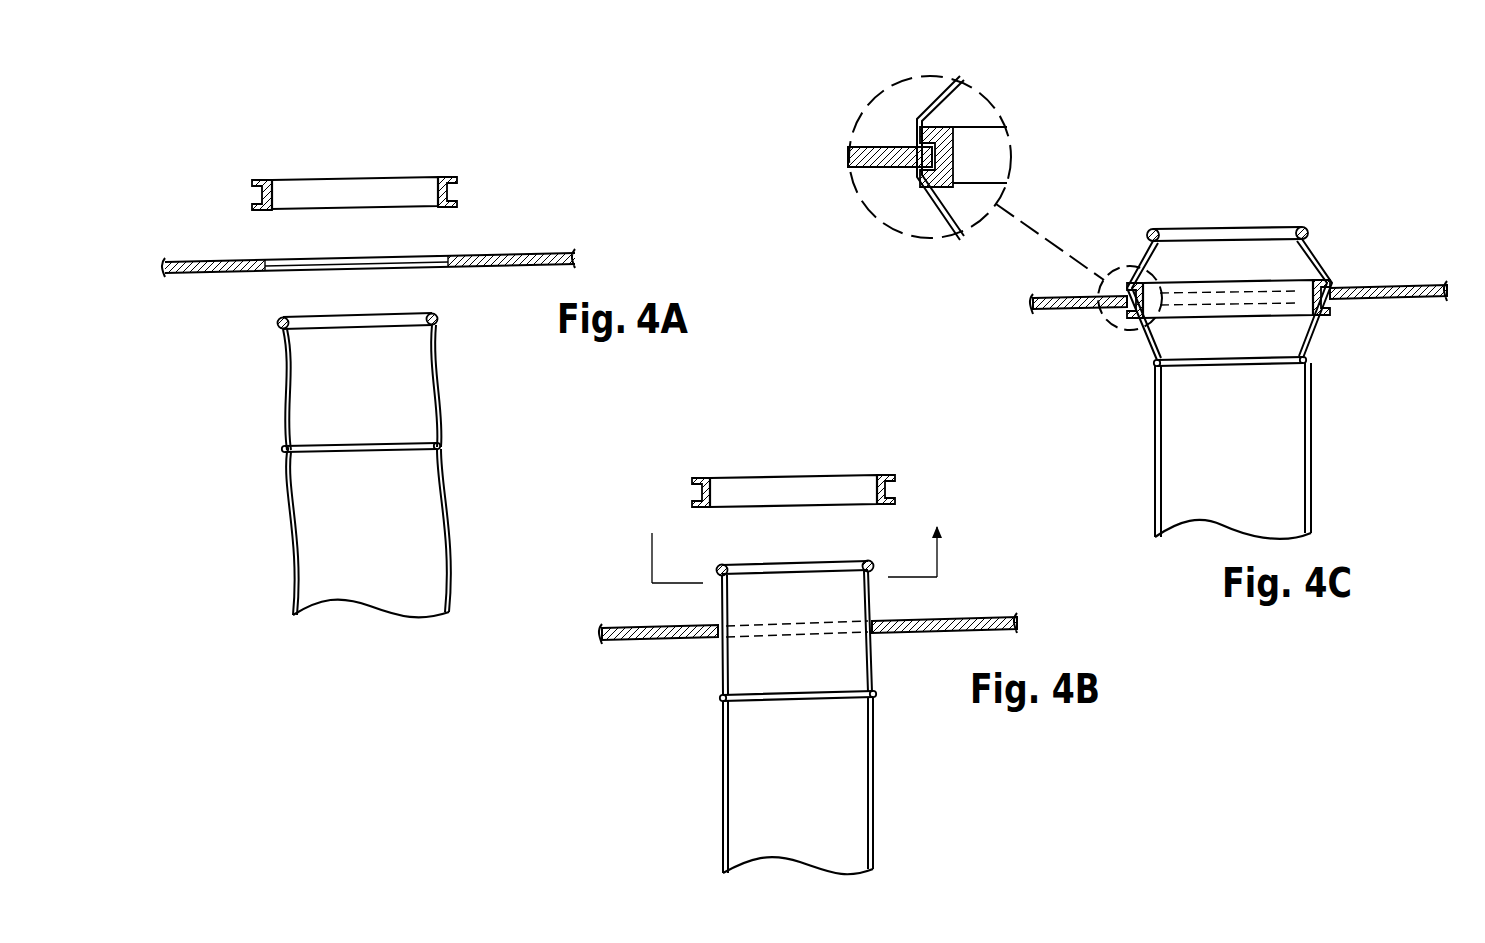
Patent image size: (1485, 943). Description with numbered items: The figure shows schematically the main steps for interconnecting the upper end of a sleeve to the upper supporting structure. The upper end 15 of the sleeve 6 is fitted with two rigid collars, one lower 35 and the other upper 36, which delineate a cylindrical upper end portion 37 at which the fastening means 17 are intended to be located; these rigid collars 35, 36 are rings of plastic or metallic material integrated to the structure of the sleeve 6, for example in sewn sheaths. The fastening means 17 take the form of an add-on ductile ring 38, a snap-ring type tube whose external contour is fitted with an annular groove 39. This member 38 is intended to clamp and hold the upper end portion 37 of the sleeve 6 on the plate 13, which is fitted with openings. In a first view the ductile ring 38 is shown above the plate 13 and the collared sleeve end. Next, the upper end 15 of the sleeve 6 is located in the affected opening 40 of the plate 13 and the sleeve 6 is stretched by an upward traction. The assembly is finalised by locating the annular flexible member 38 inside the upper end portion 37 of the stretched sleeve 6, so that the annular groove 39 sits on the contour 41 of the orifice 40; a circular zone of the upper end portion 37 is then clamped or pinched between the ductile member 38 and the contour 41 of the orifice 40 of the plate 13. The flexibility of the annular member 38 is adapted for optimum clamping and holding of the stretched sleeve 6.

In FIG. 4A, the sleeve 6 is at (291, 561).
In FIG. 4B, the sleeve 6 is at (884, 785).
In FIG. 4C, the sleeve 6 is at (1314, 478).
In FIG. 4A, the plate 13 is at (349, 244).
In FIG. 4B, the plate 13 is at (787, 606).
In FIG. 4C, the plate 13 is at (1128, 205).
In FIG. 4A, the upper end of the sleeve 15 is at (342, 403).
In FIG. 4B, the upper end of the sleeve 15 is at (813, 624).
In FIG. 4C, the upper end of the sleeve 15 is at (1128, 218).
In FIG. 4A, the fastening means 17 is at (366, 157).
In FIG. 4B, the fastening means 17 is at (806, 463).
In FIG. 4C, the fastening means 17 is at (1125, 251).
In FIG. 4A, the lower collar 35 is at (276, 456).
In FIG. 4B, the lower collar 35 is at (716, 703).
In FIG. 4C, the lower collar 35 is at (1138, 365).
In FIG. 4A, the upper collar 36 is at (271, 326).
In FIG. 4B, the upper collar 36 is at (839, 563).
In FIG. 4C, the upper collar 36 is at (1276, 223).
In FIG. 4A, the cylindrical upper end portion 37 is at (441, 370).
In FIG. 4B, the cylindrical upper end portion 37 is at (716, 612).
In FIG. 4C, the cylindrical upper end portion 37 is at (1327, 331).
In FIG. 4A, the ductile ring 38 is at (389, 174).
In FIG. 4B, the ductile ring 38 is at (824, 469).
In FIG. 4C, the ductile ring 38 is at (1262, 324).
In FIG. 4A, the annular groove 39 is at (446, 188).
In FIG. 4B, the annular groove 39 is at (901, 482).
In FIG. 4C, the annular groove 39 is at (962, 161).
In FIG. 4A, the opening 40 is at (430, 259).
In FIG. 4B, the opening 40 is at (846, 636).
In FIG. 4C, the opening 40 is at (1195, 290).
In FIG. 4A, the contour of the orifice 41 is at (287, 265).
In FIG. 4B, the contour of the orifice 41 is at (752, 620).
In FIG. 4C, the contour of the orifice 41 is at (1238, 288).